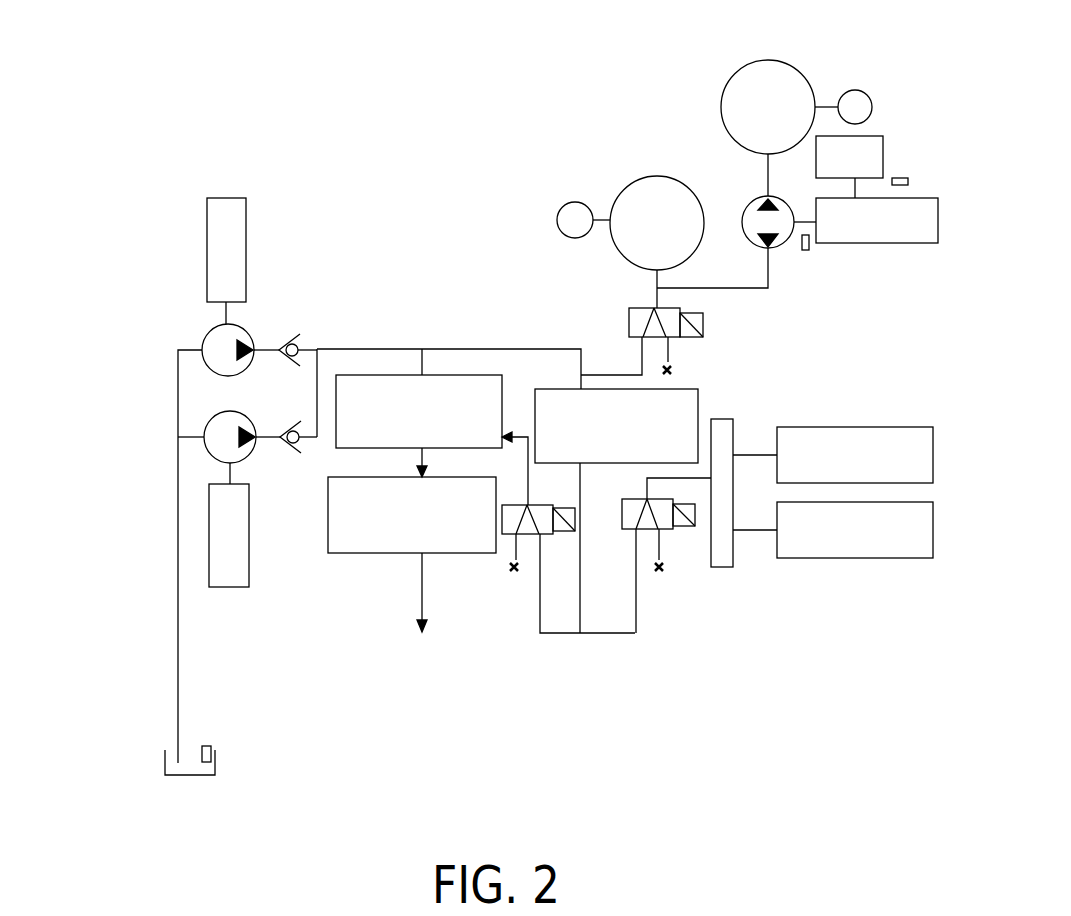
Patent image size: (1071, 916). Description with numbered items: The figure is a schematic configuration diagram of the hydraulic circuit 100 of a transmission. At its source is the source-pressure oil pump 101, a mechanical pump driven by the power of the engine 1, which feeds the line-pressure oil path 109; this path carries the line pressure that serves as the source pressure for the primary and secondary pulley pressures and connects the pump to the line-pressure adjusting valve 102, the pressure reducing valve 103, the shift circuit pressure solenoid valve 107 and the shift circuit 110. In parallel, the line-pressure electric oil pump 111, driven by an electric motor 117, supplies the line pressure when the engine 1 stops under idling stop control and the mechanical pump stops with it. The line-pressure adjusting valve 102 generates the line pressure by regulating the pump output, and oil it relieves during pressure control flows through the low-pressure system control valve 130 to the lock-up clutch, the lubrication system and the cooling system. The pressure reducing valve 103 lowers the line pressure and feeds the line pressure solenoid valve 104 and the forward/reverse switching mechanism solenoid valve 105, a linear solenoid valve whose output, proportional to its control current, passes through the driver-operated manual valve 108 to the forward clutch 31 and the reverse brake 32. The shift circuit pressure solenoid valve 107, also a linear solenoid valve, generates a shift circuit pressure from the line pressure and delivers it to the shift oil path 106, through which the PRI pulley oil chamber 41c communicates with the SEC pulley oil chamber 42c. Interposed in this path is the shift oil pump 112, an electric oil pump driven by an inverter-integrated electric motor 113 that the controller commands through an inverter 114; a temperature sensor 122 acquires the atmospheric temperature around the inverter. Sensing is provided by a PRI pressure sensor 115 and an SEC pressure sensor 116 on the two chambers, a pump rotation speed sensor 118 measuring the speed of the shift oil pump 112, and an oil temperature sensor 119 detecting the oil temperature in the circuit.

The engine 1 is at (246, 237).
The forward clutch 31 is at (855, 427).
The reverse brake 32 is at (853, 558).
The PRI pulley oil chamber 41c is at (728, 82).
The SEC pulley oil chamber 42c is at (626, 181).
The hydraulic circuit 100 is at (128, 580).
The source-pressure oil pump 101 is at (203, 333).
The line-pressure adjusting valve 102 is at (506, 389).
The pressure reducing valve 103 is at (698, 393).
The line pressure solenoid valve 104 is at (533, 538).
The forward/reverse switching mechanism solenoid valve 105 is at (633, 531).
The shift oil path 106 is at (735, 288).
The shift circuit pressure solenoid valve 107 is at (628, 308).
The manual valve 108 is at (721, 568).
The line-pressure oil path 109 is at (500, 348).
The shift circuit 110 is at (603, 83).
The line-pressure electric oil pump 111 is at (249, 455).
The shift oil pump 112 is at (746, 203).
The electric motor 113 is at (857, 244).
The inverter 114 is at (883, 138).
The PRI pressure sensor 115 is at (862, 90).
The SEC pressure sensor 116 is at (573, 202).
The electric motor 117 is at (249, 548).
The pump rotation speed sensor 118 is at (805, 251).
The oil temperature sensor 119 is at (206, 745).
The temperature sensor 122 is at (908, 181).
The low-pressure system control valve 130 is at (393, 553).